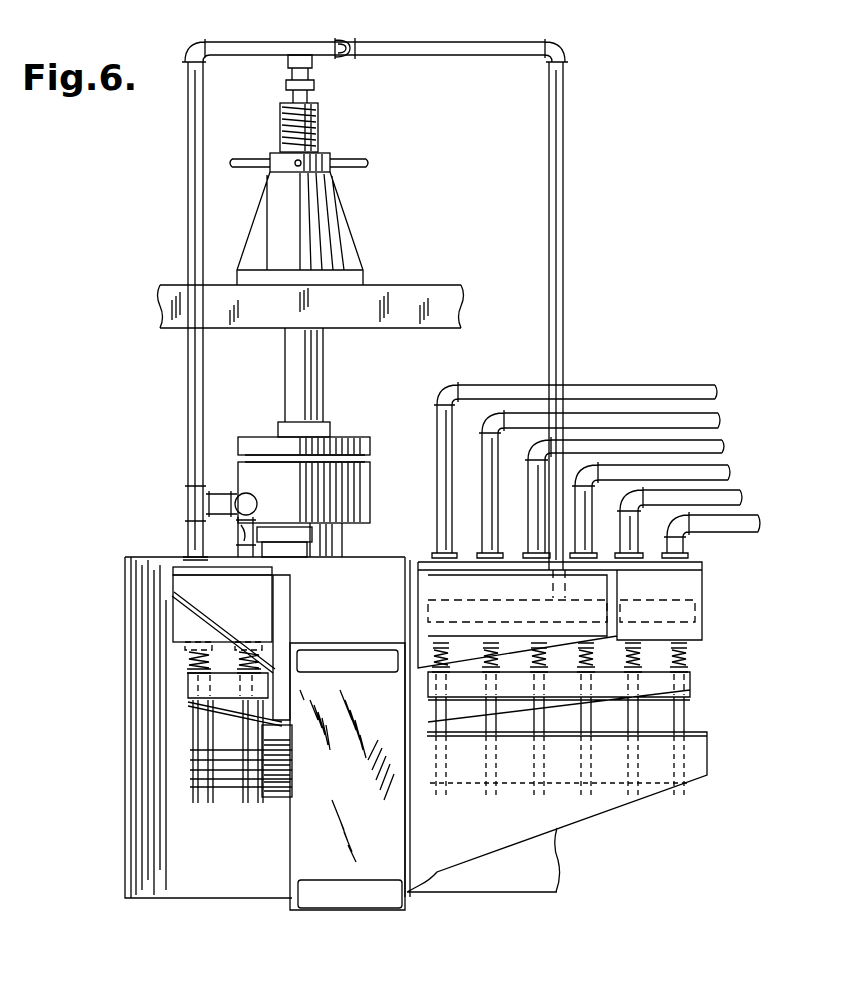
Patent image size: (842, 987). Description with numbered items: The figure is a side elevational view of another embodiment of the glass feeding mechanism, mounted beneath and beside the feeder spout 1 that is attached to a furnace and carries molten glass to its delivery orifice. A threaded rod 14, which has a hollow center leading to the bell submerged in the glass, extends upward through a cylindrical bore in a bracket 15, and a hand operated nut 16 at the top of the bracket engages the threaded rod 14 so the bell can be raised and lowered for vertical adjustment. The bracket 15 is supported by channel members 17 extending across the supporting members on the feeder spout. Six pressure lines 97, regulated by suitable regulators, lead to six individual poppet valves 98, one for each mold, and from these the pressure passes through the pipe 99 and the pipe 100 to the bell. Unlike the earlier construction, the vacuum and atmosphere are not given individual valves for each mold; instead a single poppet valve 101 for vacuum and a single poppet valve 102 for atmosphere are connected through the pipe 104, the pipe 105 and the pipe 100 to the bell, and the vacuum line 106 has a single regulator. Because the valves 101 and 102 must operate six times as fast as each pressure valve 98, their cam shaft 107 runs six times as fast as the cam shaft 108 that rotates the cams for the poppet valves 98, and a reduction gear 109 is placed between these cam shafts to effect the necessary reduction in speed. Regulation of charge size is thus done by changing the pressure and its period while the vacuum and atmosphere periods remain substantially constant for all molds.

The feeder spout 1 is at (116, 822).
The threaded rod 14 is at (313, 397).
The bracket 15 is at (338, 230).
The hand operated nut 16 is at (368, 163).
The channel members 17 is at (408, 293).
The pressure lines 97 is at (683, 442).
The poppet valves 98 is at (690, 587).
The pipe 99 is at (565, 249).
The pipe 100 is at (297, 62).
The poppet valve 101 is at (172, 596).
The poppet valve 102 is at (250, 607).
The pipe 104 is at (227, 497).
The pipe 105 is at (192, 393).
The vacuum line 106 is at (305, 545).
The cam shaft 107 is at (273, 768).
The cam shaft 108 is at (436, 768).
The reduction gear 109 is at (352, 750).